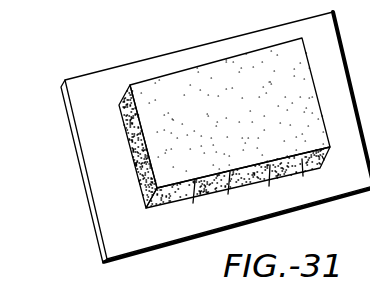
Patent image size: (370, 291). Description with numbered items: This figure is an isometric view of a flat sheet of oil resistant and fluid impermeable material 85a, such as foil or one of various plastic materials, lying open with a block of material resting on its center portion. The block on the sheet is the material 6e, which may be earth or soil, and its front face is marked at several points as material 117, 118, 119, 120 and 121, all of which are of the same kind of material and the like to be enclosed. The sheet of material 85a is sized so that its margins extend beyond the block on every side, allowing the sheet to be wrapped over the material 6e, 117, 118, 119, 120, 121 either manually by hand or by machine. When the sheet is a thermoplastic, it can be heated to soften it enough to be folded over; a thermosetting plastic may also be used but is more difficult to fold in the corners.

The sheet of oil resistant and fluid impermeable material 85a is at (103, 84).
The material 6e is at (160, 207).
The material 117 is at (193, 203).
The material 118 is at (228, 194).
The material 119 is at (269, 186).
The material 120 is at (303, 176).
The material 121 is at (322, 156).